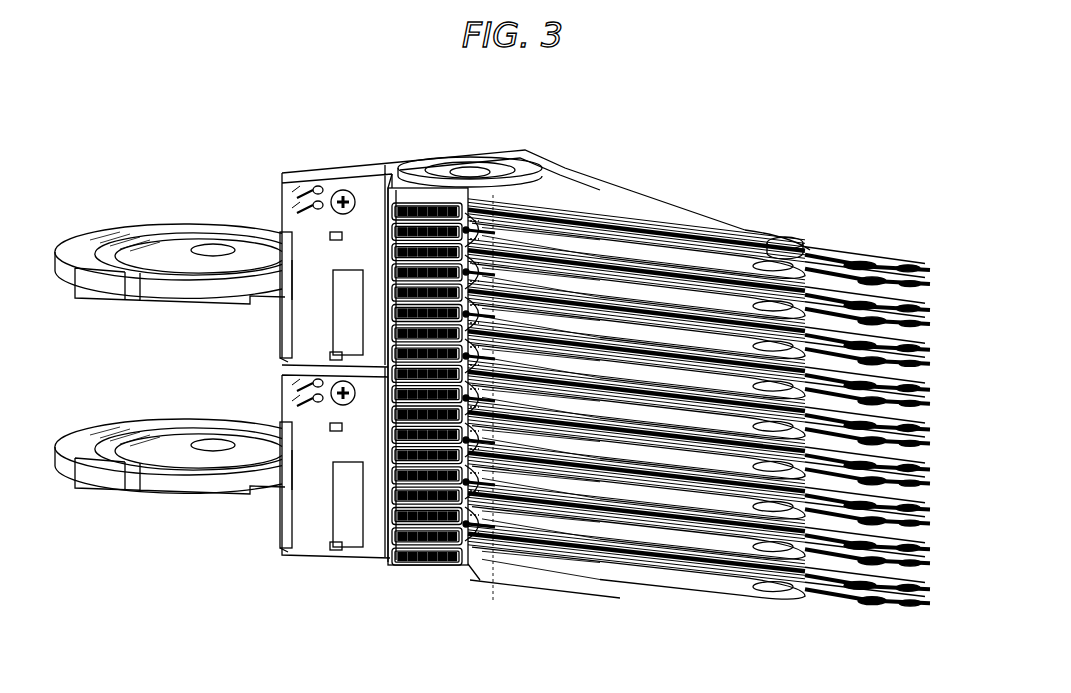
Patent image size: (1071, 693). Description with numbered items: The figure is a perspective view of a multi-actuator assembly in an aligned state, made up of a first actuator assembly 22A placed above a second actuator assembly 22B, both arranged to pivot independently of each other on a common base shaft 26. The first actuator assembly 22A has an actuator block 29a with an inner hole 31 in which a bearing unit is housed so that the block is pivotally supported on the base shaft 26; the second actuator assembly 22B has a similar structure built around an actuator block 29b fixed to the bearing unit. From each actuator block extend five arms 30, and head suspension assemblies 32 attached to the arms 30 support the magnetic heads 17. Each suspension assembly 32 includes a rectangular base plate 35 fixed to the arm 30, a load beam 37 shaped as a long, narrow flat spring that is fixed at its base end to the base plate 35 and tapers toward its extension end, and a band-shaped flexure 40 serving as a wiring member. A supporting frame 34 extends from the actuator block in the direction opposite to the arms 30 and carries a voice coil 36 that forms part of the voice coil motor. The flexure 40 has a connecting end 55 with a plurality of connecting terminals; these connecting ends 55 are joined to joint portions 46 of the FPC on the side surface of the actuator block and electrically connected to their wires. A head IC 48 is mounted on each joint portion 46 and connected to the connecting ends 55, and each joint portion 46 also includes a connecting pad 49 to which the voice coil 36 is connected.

The magnetic head 17 is at (934, 276).
The first actuator assembly 22A is at (608, 160).
The second actuator assembly 22B is at (471, 584).
The base shaft 26 is at (450, 170).
The actuator block 29a is at (355, 170).
The actuator block 29b is at (288, 556).
The arm 30 is at (634, 263).
The inner hole 31 is at (462, 168).
The head suspension assembly 32 is at (880, 243).
The supporting frame 34 is at (156, 300).
The base plate 35 is at (835, 249).
The voice coil 36 is at (200, 226).
The load beam 37 is at (916, 262).
The flexure 40 is at (850, 312).
The joint portion 46 is at (366, 197).
The head IC 48 is at (338, 290).
The connecting pad 49 is at (313, 201).
The connecting end 55 is at (390, 212).